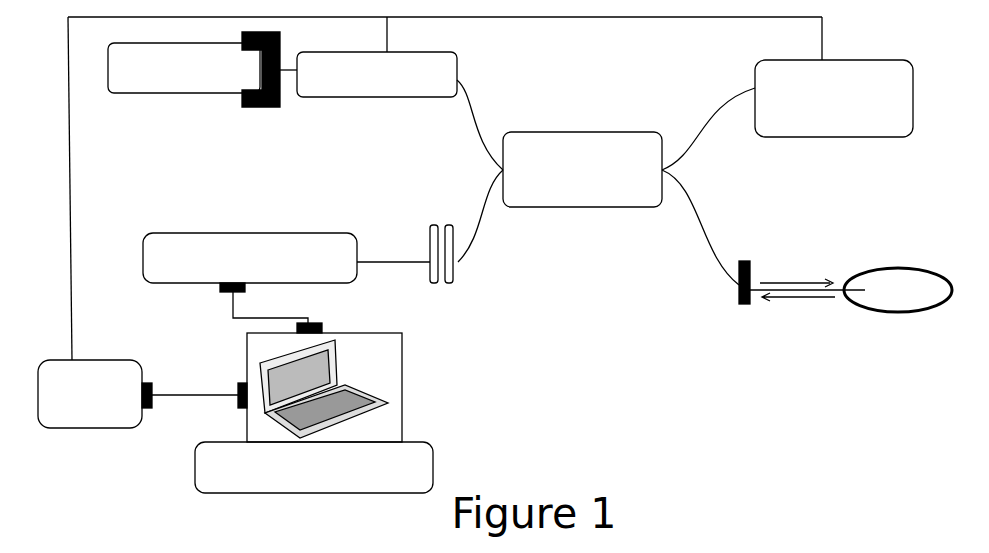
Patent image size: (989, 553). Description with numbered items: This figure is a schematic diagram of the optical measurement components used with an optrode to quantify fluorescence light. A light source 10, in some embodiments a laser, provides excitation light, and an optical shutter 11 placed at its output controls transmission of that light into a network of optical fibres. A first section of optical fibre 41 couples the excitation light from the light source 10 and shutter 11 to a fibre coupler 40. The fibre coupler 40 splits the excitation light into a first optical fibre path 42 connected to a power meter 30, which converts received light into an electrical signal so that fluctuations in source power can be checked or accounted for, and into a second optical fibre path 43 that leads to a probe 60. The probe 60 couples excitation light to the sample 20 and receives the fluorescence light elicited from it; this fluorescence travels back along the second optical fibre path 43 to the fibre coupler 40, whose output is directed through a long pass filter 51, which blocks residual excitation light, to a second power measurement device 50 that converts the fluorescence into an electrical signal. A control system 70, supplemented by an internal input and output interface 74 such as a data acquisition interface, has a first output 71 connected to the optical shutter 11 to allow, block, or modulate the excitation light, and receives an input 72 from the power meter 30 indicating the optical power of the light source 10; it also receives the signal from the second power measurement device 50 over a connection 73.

The light source 10 is at (173, 93).
The optical shutter 11 is at (313, 85).
The sample 20 is at (910, 312).
The power meter 30 is at (810, 128).
The fibre coupler 40 is at (585, 200).
The first section of optical fibre 41 is at (487, 210).
The first optical fibre path 42 is at (708, 130).
The second optical fibre path 43 is at (697, 207).
The second power measurement device 50 is at (293, 238).
The long pass filter 51 is at (430, 283).
The probe 60 is at (740, 261).
The control system 70 is at (402, 400).
The first output 71 is at (387, 28).
The input from the optical power meter 72 is at (822, 30).
The spectrometer cable 73 is at (233, 312).
The internal input and output interface 74 is at (50, 428).